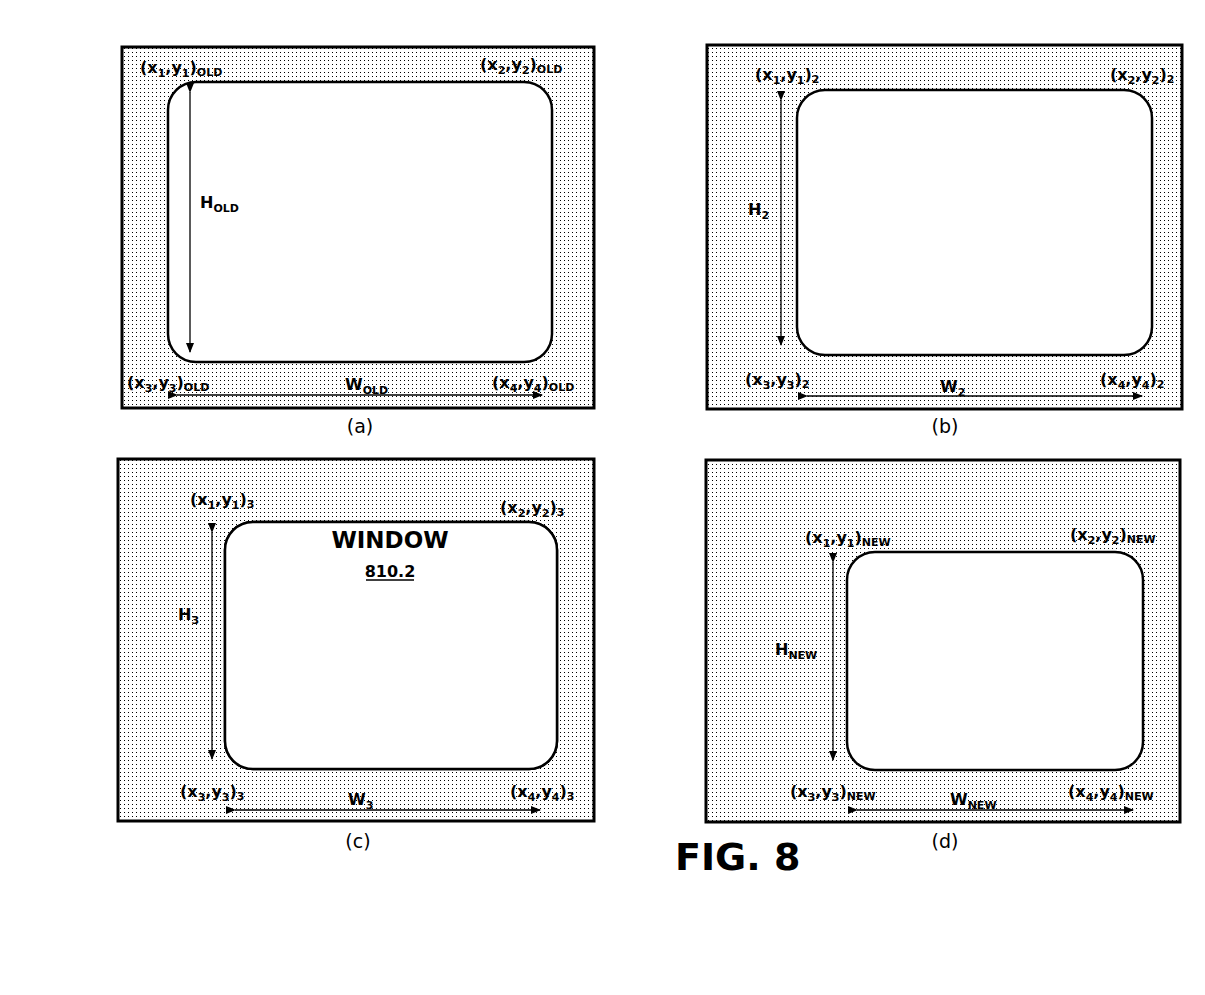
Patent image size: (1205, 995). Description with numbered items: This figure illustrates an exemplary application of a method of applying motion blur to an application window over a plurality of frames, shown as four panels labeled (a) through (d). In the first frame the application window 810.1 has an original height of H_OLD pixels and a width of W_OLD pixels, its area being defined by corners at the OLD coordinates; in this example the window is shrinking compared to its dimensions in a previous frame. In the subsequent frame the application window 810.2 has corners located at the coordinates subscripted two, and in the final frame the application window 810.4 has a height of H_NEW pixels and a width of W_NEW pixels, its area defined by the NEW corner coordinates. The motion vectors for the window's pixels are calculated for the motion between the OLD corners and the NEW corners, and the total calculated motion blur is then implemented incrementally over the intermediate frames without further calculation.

The application window 810.1 is at (335, 138).
The application window 810.2 is at (948, 148).
The application window 810.4 is at (971, 608).